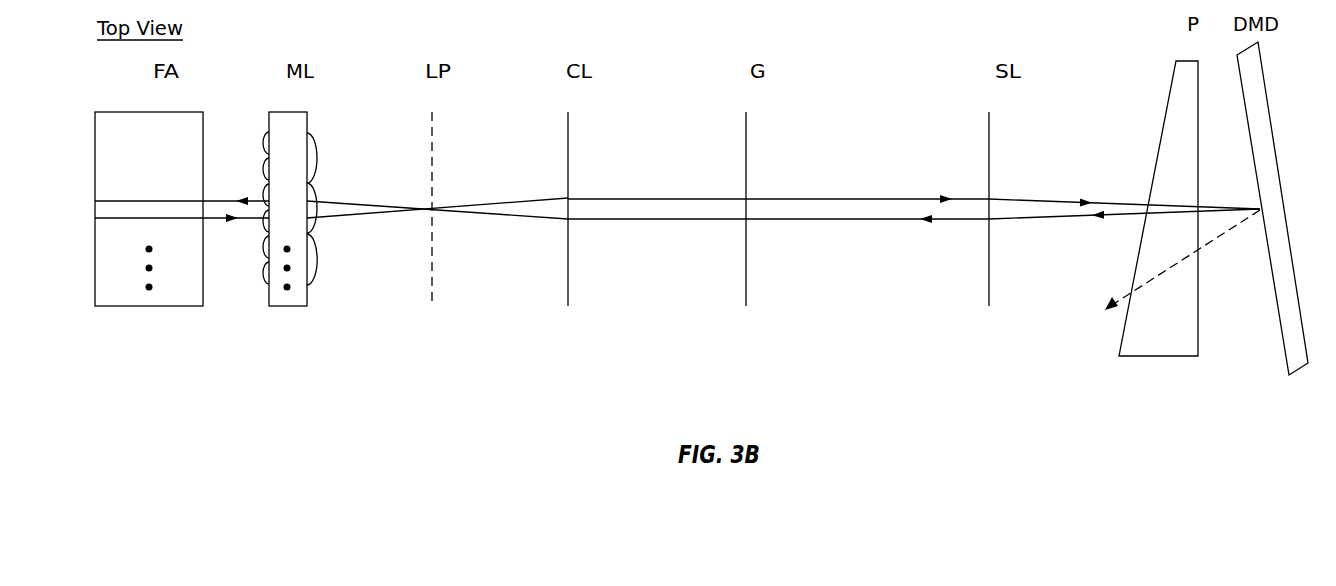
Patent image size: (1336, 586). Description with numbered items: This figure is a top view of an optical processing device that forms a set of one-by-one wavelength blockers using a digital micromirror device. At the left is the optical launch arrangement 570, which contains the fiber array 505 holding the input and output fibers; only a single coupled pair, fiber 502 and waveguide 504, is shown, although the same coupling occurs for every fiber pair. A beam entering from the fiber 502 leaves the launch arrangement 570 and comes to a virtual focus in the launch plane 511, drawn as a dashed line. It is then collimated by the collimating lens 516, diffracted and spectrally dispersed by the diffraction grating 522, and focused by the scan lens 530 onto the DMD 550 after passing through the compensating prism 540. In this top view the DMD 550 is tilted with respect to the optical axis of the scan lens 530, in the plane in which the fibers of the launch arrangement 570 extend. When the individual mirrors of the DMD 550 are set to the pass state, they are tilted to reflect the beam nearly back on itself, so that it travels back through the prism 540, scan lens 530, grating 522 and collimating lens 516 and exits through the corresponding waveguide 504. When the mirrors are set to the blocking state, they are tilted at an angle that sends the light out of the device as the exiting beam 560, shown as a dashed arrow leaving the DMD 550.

The fiber 502 is at (133, 221).
The waveguide 504 is at (133, 198).
The fiber array 505 is at (116, 307).
The launch plane 511 is at (433, 250).
The collimating lens 516 is at (568, 278).
The diffraction grating 522 is at (746, 288).
The scan lens 530 is at (989, 289).
The compensating prism 540 is at (1159, 357).
The DMD 550 is at (1299, 371).
The beam 560 is at (1216, 240).
The optical launch arrangement 570 is at (293, 352).